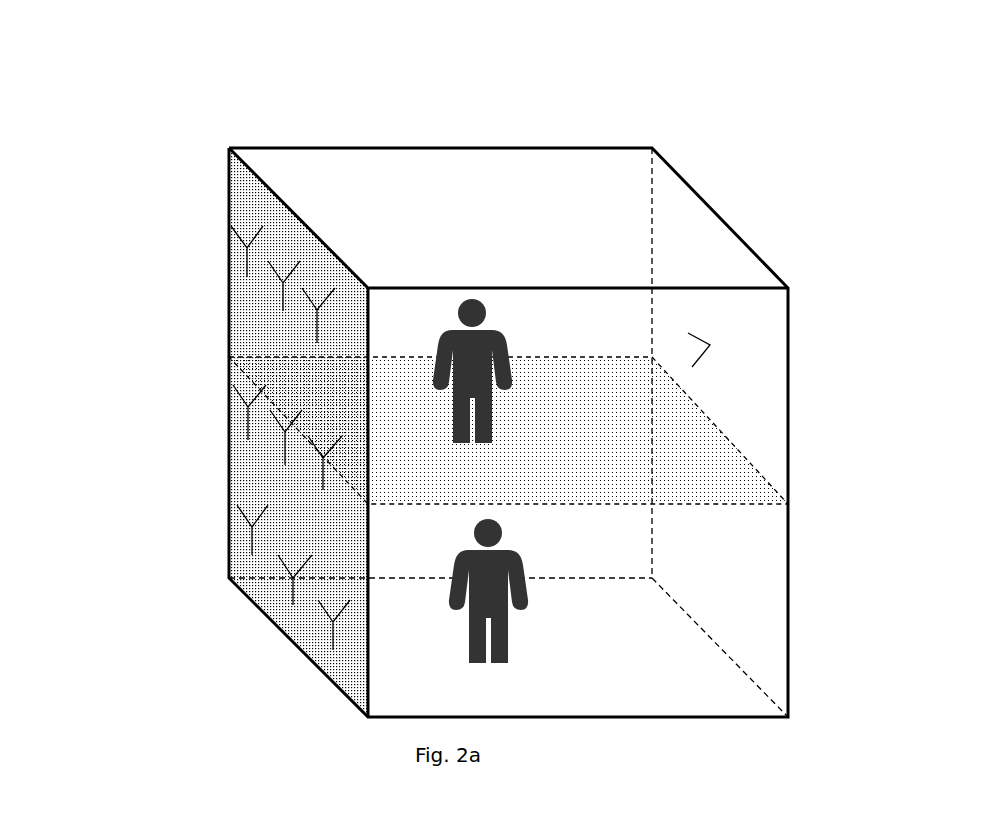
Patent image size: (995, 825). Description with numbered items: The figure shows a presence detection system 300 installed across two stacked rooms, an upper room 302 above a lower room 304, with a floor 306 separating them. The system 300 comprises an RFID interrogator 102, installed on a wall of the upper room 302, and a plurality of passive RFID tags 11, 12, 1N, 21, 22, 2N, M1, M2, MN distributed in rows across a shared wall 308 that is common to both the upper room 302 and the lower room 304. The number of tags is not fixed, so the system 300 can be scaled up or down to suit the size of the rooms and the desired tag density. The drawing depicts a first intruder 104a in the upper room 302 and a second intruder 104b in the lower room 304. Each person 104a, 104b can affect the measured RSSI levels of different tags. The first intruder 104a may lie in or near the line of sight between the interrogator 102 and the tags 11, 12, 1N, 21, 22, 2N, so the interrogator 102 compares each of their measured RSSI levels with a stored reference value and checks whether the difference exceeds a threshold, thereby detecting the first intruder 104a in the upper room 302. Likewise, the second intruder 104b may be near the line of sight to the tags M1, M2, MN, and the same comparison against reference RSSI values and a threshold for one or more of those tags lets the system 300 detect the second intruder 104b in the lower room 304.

The presence detection system 300 is at (123, 59).
The upper room 302 is at (578, 344).
The lower room 304 is at (578, 610).
The floor 306 is at (678, 457).
The shared wall 308 is at (239, 324).
The RFID interrogator 102 is at (710, 345).
The first intruder 104a is at (468, 282).
The second intruder 104b is at (550, 592).
The passive RFID tag 11 is at (247, 265).
The passive RFID tag 12 is at (284, 296).
The passive RFID tag 1N is at (318, 324).
The passive RFID tag 21 is at (249, 421).
The passive RFID tag 22 is at (286, 445).
The passive RFID tag 2N is at (325, 471).
The passive RFID tag M1 is at (252, 542).
The passive RFID tag M2 is at (295, 591).
The passive RFID tag MN is at (334, 636).